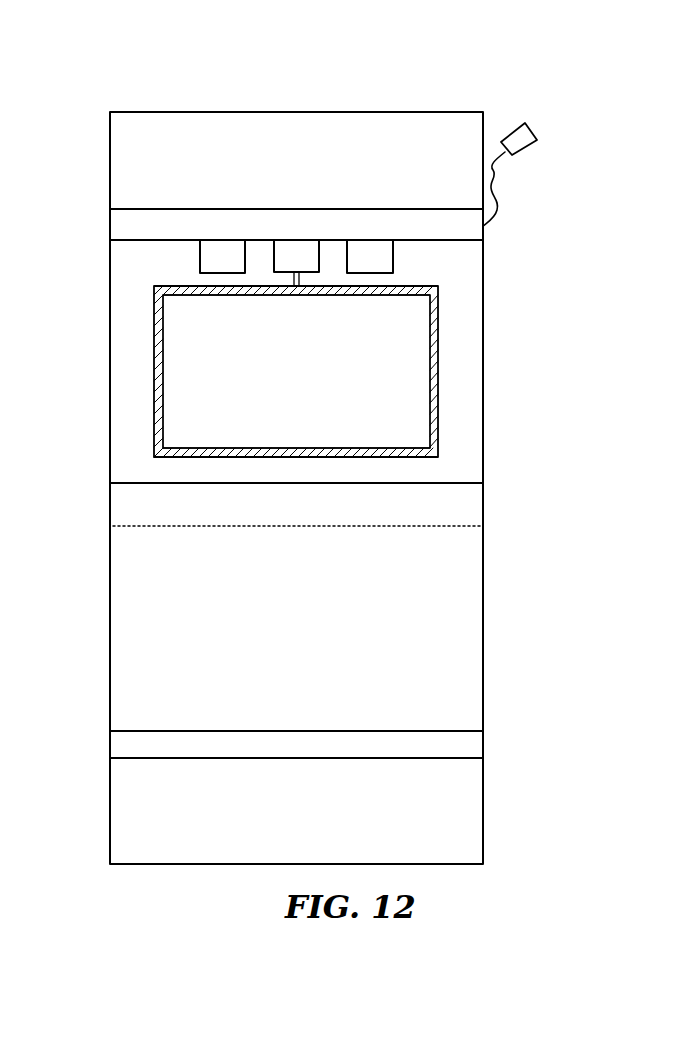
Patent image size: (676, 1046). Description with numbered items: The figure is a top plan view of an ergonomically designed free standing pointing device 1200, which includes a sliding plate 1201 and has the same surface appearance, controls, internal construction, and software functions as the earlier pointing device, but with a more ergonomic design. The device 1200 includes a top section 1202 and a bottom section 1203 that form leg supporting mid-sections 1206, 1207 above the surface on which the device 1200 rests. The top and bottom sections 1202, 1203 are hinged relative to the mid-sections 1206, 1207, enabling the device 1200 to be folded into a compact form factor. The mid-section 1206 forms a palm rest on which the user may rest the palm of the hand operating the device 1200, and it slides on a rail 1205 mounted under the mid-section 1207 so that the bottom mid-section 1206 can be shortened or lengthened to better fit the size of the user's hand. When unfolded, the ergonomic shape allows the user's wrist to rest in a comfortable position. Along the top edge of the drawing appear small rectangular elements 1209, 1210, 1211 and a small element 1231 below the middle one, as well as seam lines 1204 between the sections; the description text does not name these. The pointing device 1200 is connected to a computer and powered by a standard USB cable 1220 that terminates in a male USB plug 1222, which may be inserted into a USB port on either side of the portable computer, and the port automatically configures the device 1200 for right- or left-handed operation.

The pointing device 1200 is at (134, 74).
The sliding plate 1201 is at (417, 392).
The top section 1202 is at (483, 118).
The bottom section 1203 is at (483, 812).
The seam 1204 is at (483, 285).
The rail 1205 is at (439, 339).
The mid-section 1206 is at (483, 600).
The mid-section 1207 is at (483, 454).
The speaker 1209 is at (372, 238).
The sensor 1210 is at (222, 238).
The camera 1211 is at (297, 238).
The USB cable 1220 is at (498, 163).
The male USB plug 1222 is at (533, 130).
The indicator 1231 is at (292, 286).